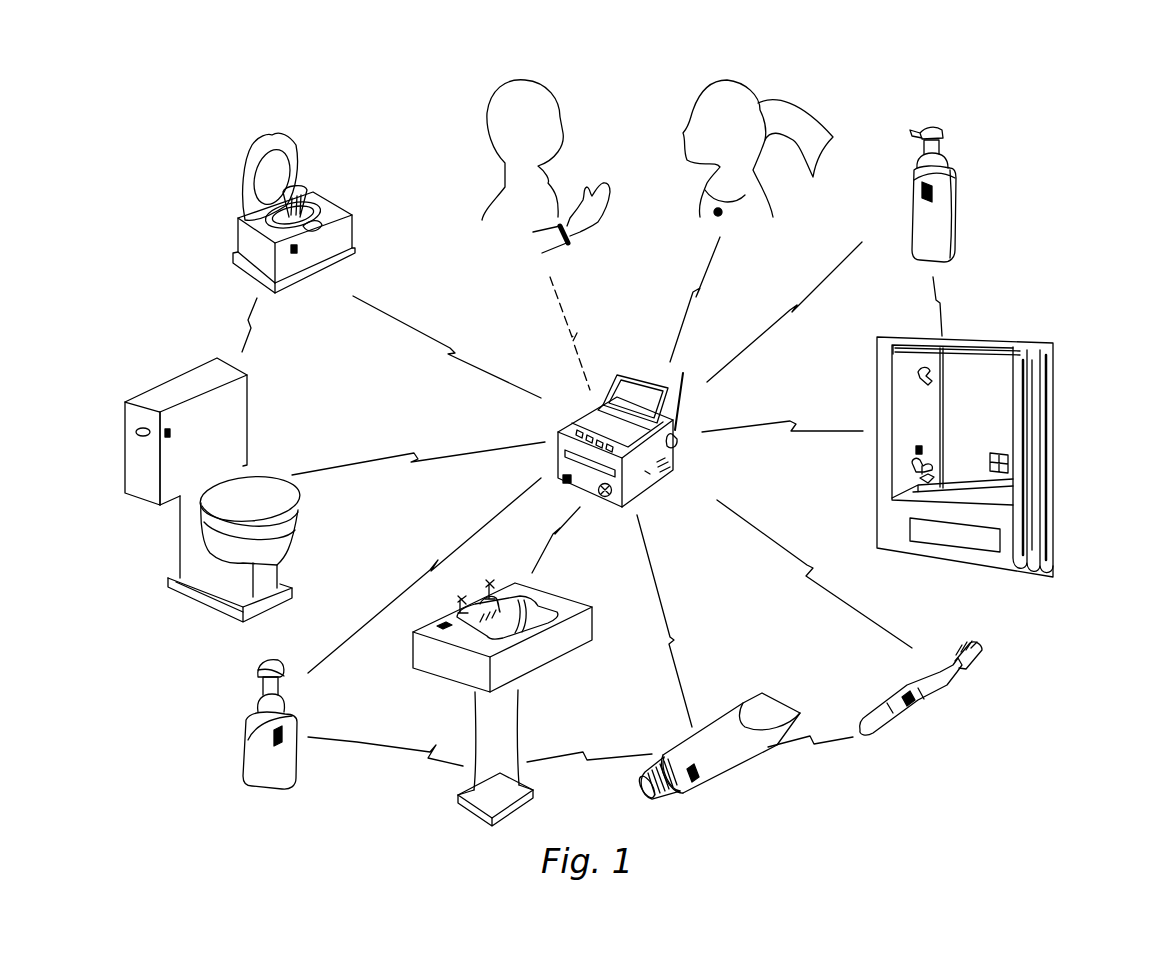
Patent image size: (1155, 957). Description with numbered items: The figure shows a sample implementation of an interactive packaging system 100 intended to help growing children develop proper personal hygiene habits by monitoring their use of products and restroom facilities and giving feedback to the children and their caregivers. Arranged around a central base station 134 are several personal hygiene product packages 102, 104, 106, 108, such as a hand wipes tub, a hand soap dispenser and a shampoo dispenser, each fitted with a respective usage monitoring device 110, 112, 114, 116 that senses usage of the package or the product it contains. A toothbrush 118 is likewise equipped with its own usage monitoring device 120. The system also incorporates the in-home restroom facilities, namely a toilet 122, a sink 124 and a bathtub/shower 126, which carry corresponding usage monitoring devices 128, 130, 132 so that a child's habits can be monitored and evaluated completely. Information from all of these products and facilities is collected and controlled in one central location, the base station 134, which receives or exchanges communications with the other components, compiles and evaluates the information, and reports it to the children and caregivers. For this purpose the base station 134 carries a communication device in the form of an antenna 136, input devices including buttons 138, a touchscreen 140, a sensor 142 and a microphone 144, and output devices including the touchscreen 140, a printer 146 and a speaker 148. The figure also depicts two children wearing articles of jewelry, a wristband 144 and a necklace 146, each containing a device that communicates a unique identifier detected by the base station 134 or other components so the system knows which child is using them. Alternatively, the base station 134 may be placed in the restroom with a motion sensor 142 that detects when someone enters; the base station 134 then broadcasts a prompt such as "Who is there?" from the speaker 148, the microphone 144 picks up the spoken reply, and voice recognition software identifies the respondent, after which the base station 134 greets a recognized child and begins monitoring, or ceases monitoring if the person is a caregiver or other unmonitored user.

The interactive packaging system 100 is at (1068, 120).
The personal hygiene product package 102 is at (300, 275).
The personal hygiene product package 104 is at (292, 775).
The personal hygiene product package 106 is at (773, 692).
The personal hygiene product package 108 is at (955, 252).
The usage monitoring device 110 is at (300, 248).
The usage monitoring device 112 is at (287, 733).
The usage monitoring device 114 is at (698, 780).
The usage monitoring device 116 is at (937, 188).
The toothbrush 118 is at (978, 656).
The usage monitoring device 120 is at (916, 703).
The toilet 122 is at (290, 540).
The sink 124 is at (555, 655).
The bathtub/shower 126 is at (1000, 405).
The usage monitoring device 128 is at (173, 433).
The usage monitoring device 130 is at (446, 632).
The usage monitoring device 132 is at (915, 450).
The base station 134 is at (679, 453).
The antenna 136 is at (683, 403).
The buttons 138 is at (600, 430).
The touchscreen 140 is at (628, 388).
The sensor 142 is at (558, 481).
The microphone 144 is at (566, 238).
The printer 146 is at (722, 214).
The speaker 148 is at (670, 470).